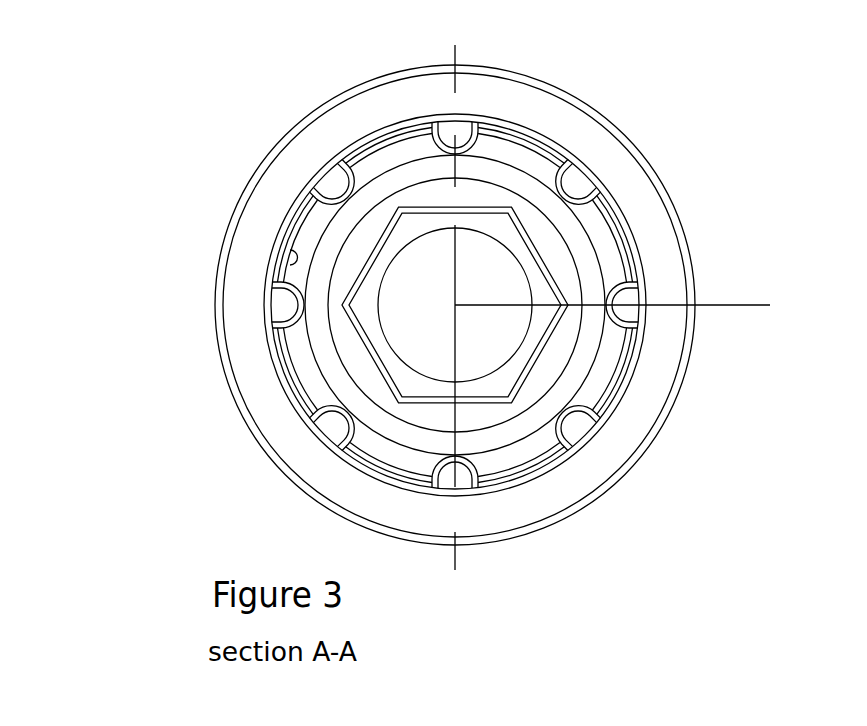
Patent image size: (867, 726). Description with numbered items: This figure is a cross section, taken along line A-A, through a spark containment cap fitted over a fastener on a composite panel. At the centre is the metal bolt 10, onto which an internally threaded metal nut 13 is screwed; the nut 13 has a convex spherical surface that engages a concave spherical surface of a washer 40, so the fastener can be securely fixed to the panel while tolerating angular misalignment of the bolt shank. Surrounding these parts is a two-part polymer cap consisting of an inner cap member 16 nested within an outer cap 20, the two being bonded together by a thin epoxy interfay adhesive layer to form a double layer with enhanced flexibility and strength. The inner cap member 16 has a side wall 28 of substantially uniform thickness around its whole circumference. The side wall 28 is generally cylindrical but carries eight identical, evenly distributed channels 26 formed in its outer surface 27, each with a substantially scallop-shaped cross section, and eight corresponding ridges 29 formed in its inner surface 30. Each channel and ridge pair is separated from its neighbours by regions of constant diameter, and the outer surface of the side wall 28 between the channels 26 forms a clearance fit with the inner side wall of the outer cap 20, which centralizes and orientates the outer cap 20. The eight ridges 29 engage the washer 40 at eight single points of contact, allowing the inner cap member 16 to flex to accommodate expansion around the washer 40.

The bolt 10 is at (510, 285).
The nut 13 is at (360, 262).
The inner cap member 16 is at (300, 222).
The outer cap 20 is at (667, 367).
The channels 26 is at (453, 128).
The outer surface 27 is at (292, 393).
The side wall 28 is at (278, 367).
The ridges 29 is at (458, 150).
The inner surface 30 is at (292, 263).
The washer 40 is at (405, 167).